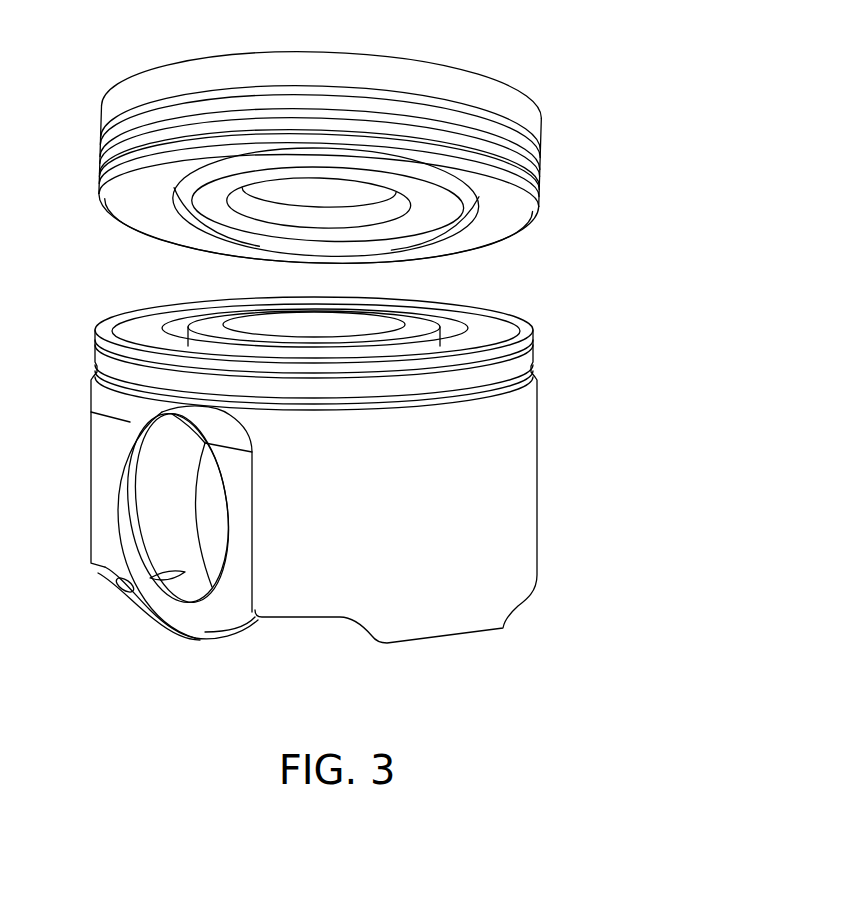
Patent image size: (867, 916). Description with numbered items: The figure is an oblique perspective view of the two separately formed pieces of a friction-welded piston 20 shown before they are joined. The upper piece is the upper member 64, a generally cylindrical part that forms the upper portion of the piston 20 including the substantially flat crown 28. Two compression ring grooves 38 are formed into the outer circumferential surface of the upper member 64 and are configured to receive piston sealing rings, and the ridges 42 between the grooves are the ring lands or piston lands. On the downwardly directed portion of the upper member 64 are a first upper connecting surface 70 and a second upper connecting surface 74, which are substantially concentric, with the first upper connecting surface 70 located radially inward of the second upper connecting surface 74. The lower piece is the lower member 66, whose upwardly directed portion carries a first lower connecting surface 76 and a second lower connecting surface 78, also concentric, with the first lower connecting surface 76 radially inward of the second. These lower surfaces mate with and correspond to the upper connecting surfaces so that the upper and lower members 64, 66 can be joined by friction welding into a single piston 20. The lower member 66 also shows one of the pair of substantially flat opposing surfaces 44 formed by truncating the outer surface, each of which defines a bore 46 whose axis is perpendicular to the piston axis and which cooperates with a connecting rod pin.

The piston 20 is at (666, 310).
The crown 28 is at (151, 72).
The upper member 64 is at (107, 105).
The ridges 42 is at (97, 146).
The compression ring grooves 38 is at (543, 153).
The first upper connecting surface 70 is at (436, 220).
The second upper connecting surface 74 is at (540, 218).
The lower member 66 is at (526, 521).
The first lower connecting surface 76 is at (200, 318).
The second lower connecting surface 78 is at (116, 324).
The opposing surfaces 44 is at (100, 541).
The bore 46 is at (203, 531).